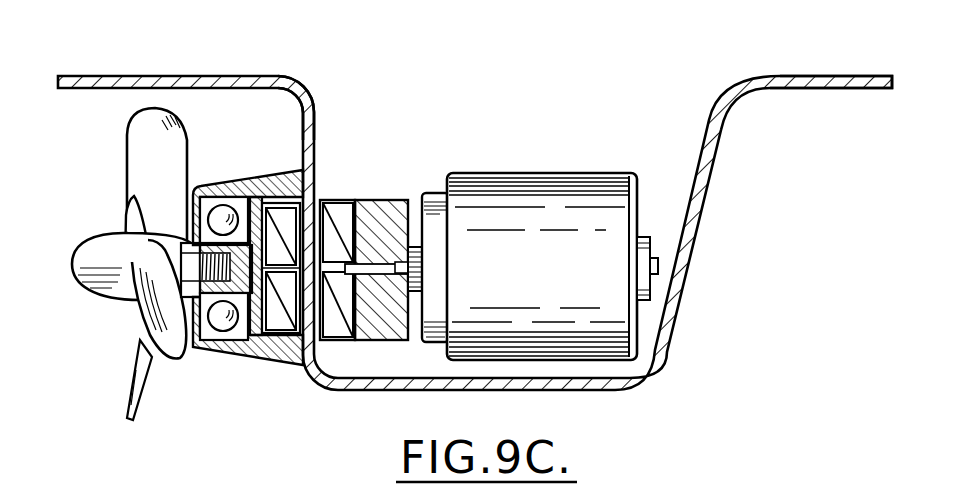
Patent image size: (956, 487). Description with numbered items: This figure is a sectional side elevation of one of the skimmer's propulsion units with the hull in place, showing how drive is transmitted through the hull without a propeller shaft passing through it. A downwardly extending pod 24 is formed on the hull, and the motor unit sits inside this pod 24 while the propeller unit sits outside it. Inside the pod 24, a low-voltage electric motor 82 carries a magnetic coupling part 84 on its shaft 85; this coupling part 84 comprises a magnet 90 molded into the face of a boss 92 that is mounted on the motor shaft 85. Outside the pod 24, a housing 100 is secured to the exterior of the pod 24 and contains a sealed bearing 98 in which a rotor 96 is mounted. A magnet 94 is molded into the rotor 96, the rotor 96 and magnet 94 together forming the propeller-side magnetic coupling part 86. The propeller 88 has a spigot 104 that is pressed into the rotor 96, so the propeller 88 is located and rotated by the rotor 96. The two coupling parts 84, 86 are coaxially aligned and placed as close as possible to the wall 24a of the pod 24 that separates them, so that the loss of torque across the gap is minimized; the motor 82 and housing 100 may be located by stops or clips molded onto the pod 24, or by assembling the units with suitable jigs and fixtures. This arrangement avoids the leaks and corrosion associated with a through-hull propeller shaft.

The pod 24 is at (709, 162).
The wall of pod 24a is at (314, 110).
The electric motor 82 is at (561, 263).
The magnetic coupling part 84 is at (408, 223).
The shaft 85 is at (393, 200).
The magnetic coupling part 86 is at (233, 262).
The propeller 88 is at (128, 264).
The magnet 90 is at (334, 200).
The boss 92 is at (374, 200).
The magnet 94 is at (282, 366).
The rotor 96 is at (262, 364).
The sealed bearing 98 is at (221, 200).
The housing 100 is at (291, 184).
The spigot 104 is at (117, 246).